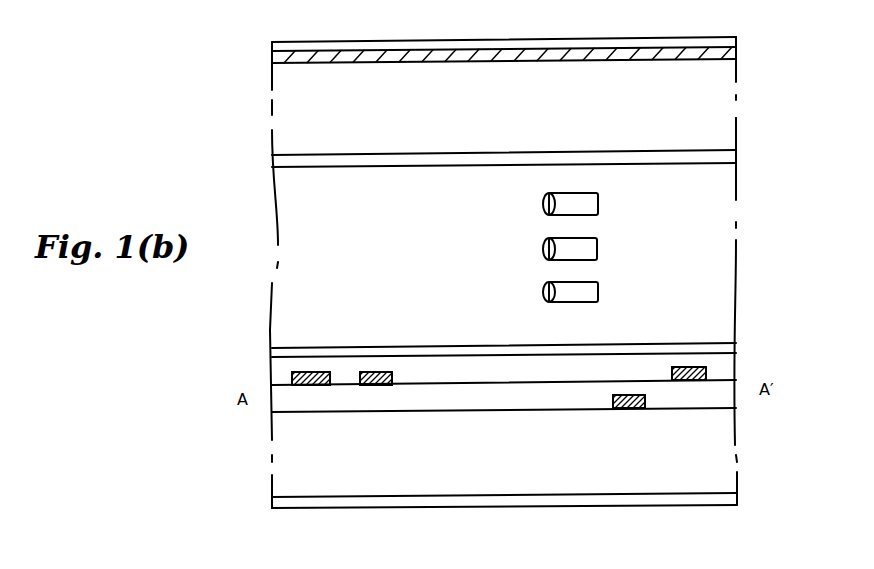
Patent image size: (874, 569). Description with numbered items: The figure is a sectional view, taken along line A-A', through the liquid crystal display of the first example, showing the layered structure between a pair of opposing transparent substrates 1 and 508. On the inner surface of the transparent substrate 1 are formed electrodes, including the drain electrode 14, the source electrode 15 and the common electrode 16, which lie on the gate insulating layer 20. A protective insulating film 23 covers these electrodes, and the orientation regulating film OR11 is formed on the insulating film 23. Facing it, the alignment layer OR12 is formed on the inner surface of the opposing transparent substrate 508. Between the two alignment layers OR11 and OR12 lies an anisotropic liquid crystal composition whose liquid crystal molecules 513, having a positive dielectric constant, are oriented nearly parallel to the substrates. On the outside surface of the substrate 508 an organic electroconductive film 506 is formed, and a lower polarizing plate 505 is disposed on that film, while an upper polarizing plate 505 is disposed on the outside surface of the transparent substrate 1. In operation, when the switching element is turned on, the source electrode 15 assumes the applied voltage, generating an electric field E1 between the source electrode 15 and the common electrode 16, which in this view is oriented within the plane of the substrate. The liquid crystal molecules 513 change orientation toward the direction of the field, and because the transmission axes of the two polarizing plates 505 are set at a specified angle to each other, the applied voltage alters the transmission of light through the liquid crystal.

The transparent substrate 1 is at (733, 425).
The polarizing plate 505 is at (735, 40).
The organic electroconductive film 506 is at (736, 56).
The transparent substrate 508 is at (736, 125).
The alignment layer OR12 is at (736, 160).
The liquid crystal molecules 513 is at (598, 204).
The electric field E1 is at (570, 331).
The orientation regulating film OR11 is at (736, 343).
The protective insulating film 23 is at (417, 368).
The drain electrode 14 is at (311, 372).
The source electrode 15 is at (368, 372).
The gate insulating layer 20 is at (322, 405).
The common electrode 16 is at (632, 410).